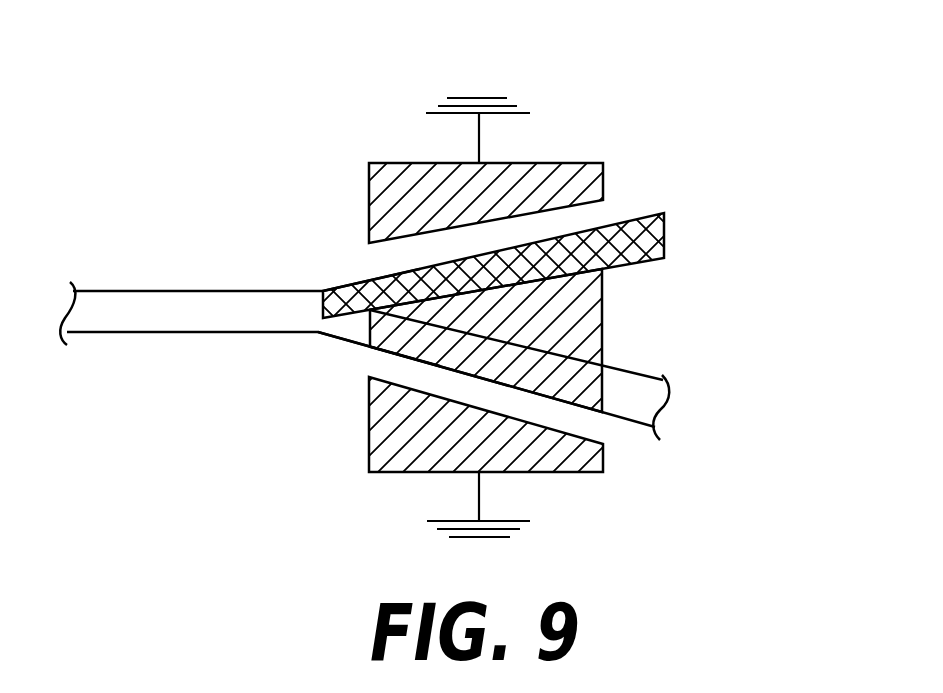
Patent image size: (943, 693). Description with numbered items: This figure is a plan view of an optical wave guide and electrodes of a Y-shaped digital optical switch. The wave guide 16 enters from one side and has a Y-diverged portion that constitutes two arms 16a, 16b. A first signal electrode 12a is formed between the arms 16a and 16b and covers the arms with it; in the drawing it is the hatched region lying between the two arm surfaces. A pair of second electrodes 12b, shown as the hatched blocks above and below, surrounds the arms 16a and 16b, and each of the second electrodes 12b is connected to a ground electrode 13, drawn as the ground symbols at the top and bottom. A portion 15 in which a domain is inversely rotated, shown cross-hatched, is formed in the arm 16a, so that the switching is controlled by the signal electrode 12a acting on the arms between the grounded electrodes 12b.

The first signal electrode 12a is at (605, 317).
The second electrodes 12b is at (532, 182).
The ground electrode 13 is at (517, 107).
The portion in which a domain is inversely rotated 15 is at (667, 240).
The wave guide 16 is at (183, 289).
The arm 16a is at (389, 277).
The arm 16b is at (390, 357).